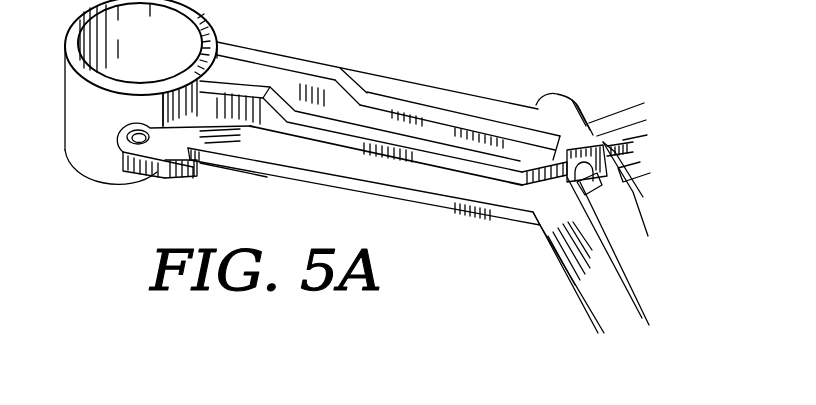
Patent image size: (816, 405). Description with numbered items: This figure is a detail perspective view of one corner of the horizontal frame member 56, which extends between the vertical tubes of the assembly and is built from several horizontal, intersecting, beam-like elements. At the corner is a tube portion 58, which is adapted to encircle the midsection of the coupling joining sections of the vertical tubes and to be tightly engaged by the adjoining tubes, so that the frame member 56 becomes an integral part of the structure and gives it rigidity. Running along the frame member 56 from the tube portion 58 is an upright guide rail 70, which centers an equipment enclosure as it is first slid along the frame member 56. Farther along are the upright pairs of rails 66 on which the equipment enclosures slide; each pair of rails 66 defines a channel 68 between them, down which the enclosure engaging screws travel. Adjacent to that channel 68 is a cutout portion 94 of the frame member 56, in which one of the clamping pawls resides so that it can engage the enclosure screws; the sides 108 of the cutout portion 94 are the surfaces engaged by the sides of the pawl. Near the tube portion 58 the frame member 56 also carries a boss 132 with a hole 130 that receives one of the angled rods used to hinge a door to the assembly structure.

The horizontal frame member 56 is at (396, 104).
The tube portion 58 is at (90, 99).
The rails 66 is at (618, 137).
The channel 68 is at (633, 147).
The upright guide rail 70 is at (229, 103).
The cutout portion 94 is at (551, 232).
The side of cutout portion 108 is at (624, 191).
The hole 130 is at (112, 130).
The boss 132 is at (157, 175).